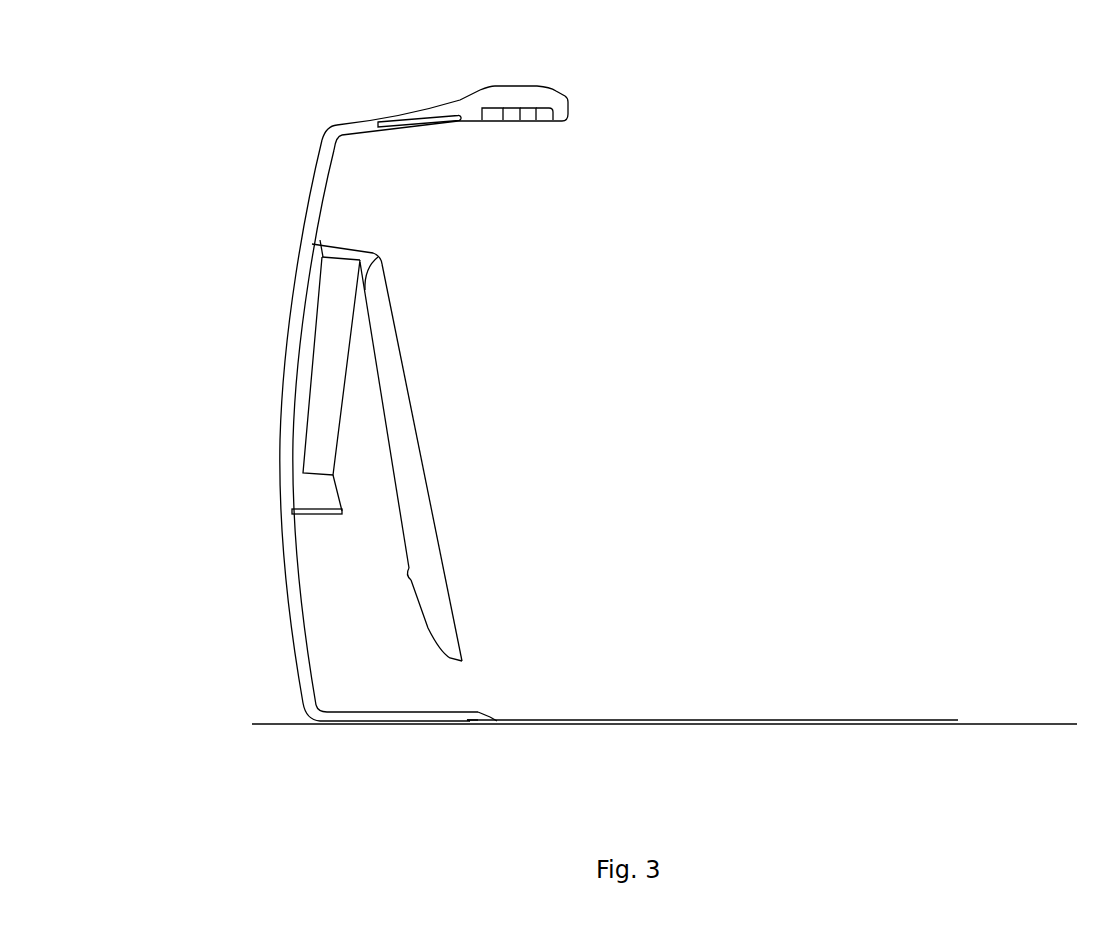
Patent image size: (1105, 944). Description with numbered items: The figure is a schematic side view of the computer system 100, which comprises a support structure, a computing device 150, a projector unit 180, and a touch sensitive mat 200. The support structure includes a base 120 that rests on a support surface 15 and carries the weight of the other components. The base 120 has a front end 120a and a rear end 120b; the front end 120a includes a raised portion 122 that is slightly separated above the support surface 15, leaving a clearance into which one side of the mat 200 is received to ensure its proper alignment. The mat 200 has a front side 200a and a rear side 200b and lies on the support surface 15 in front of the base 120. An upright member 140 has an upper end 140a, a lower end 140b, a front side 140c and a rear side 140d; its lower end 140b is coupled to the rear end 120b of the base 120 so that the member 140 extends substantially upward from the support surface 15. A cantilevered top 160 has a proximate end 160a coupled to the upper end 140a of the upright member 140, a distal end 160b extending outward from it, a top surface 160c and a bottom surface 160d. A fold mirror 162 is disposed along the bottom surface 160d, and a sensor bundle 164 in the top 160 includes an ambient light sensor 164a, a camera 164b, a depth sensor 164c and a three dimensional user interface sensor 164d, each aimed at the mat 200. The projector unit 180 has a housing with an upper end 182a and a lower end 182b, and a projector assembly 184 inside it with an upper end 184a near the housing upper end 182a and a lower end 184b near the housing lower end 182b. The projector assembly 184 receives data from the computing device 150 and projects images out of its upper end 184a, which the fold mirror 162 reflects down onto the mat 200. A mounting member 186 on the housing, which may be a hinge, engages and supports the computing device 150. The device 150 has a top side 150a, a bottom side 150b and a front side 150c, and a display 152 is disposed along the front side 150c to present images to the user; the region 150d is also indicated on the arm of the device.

The support surface 15 is at (1000, 723).
The system 100 is at (778, 212).
The base 120 is at (440, 716).
The front end 120a is at (499, 713).
The rear end 120b is at (320, 726).
The raised portion 122 is at (485, 711).
The upright member 140 is at (295, 411).
The upper end 140a is at (321, 133).
The lower end 140b is at (305, 712).
The front side 140c is at (305, 610).
The rear side 140d is at (286, 598).
The computing device 150 is at (460, 449).
The top side 150a is at (386, 262).
The bottom side 150b is at (472, 663).
The front side 150c is at (471, 462).
The display 152 is at (432, 437).
The arm inner surface 150d is at (413, 578).
The top 160 is at (468, 114).
The proximate end 160a is at (336, 122).
The distal end 160b is at (572, 100).
The top surface 160c is at (396, 113).
The bottom surface 160d is at (368, 140).
The fold mirror 162 is at (420, 127).
The sensor bundle 164 is at (525, 95).
The ambient light sensor 164a is at (578, 90).
The camera 164b is at (525, 108).
The depth sensor 164c is at (505, 108).
The three dimensional user interface sensor 164d is at (496, 108).
The projector unit 180 is at (361, 385).
The upper end 182a is at (322, 222).
The lower end 182b is at (329, 520).
The projector assembly 184 is at (316, 381).
The upper end 184a is at (327, 257).
The lower end 184b is at (336, 490).
The mounting member 186 is at (368, 290).
The touch sensitive mat 200 is at (727, 730).
The front side 200a is at (958, 723).
The rear side 200b is at (468, 723).